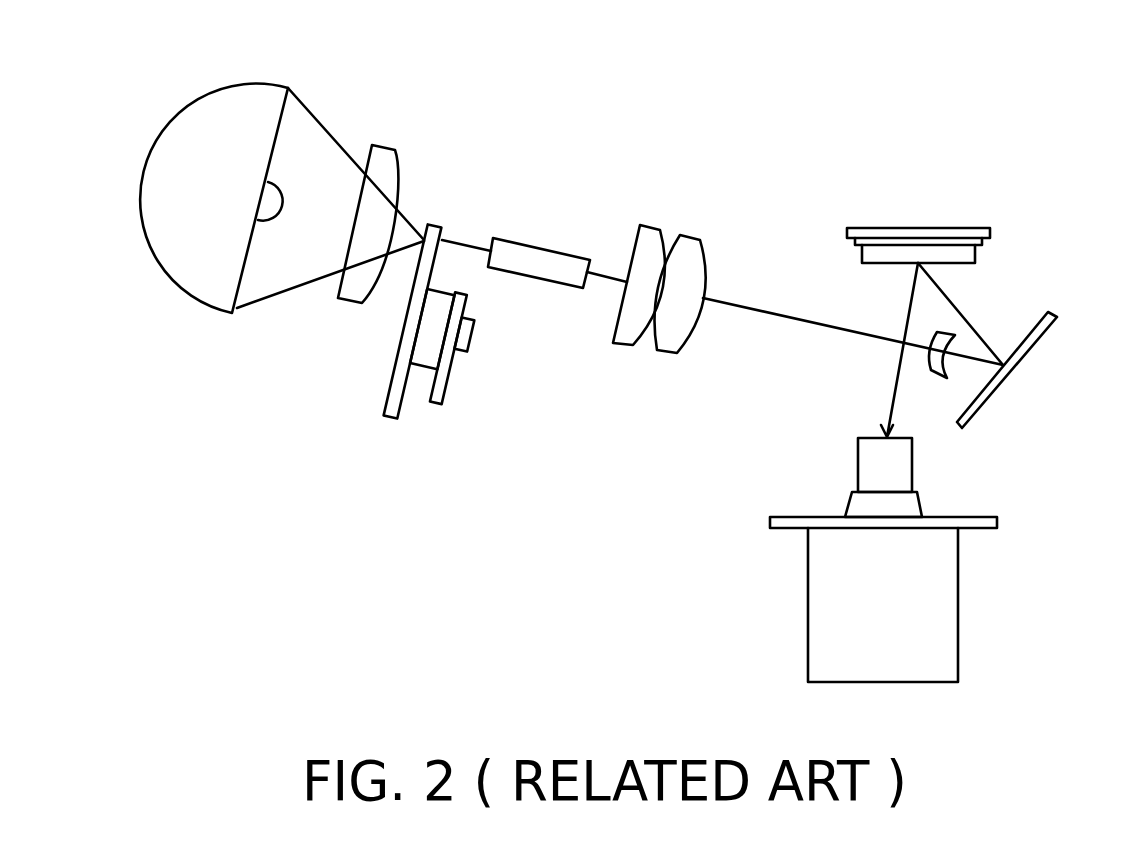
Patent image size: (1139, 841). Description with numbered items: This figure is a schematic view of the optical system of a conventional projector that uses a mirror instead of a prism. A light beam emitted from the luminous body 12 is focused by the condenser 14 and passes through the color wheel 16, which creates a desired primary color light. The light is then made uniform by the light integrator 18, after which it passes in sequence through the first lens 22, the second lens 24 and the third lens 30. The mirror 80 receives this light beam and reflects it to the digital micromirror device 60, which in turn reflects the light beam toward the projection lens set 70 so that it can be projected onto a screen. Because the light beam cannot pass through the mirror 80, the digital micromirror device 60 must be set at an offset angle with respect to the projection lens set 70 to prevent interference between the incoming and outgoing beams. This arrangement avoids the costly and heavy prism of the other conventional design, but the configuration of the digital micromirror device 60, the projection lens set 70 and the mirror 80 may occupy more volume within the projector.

The luminous body 12 is at (201, 112).
The condenser 14 is at (378, 145).
The color wheel 16 is at (430, 223).
The light integrator 18 is at (543, 249).
The first lens 22 is at (622, 347).
The second lens 24 is at (692, 237).
The third lens 30 is at (937, 378).
The digital micromirror device 60 is at (917, 232).
The projection lens set 70 is at (945, 602).
The mirror 80 is at (1040, 337).